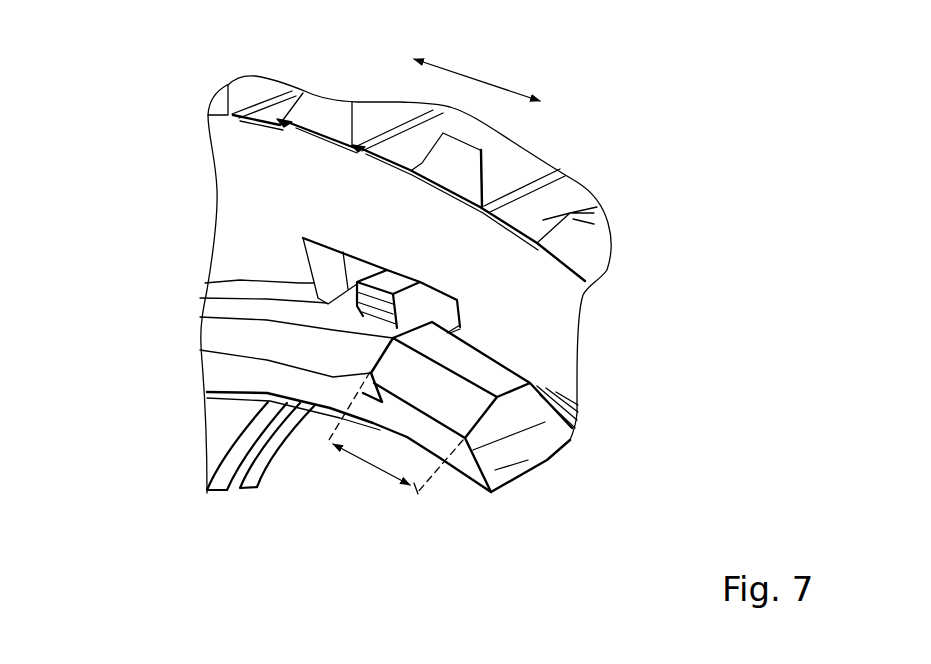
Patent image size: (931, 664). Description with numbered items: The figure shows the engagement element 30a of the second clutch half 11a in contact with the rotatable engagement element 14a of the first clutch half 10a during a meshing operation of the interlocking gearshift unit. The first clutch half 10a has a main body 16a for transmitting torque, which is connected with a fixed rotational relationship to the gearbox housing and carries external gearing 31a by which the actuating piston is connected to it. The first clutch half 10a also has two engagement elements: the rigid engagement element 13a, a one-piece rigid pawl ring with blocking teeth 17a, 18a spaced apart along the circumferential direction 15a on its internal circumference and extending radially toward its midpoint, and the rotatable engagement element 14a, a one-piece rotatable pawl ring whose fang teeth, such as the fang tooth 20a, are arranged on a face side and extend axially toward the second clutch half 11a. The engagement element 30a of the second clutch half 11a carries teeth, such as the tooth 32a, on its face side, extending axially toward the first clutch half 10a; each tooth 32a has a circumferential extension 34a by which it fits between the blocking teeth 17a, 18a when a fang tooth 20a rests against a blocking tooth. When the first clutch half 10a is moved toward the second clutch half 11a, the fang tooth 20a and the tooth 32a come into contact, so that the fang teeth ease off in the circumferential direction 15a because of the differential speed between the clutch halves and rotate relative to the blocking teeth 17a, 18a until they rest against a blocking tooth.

The first clutch half 10a is at (209, 190).
The second clutch half 11a is at (190, 350).
The rigid engagement element 13a is at (545, 333).
The rotatable engagement element 14a is at (352, 258).
The circumferential direction 15a is at (477, 78).
The main body 16a is at (247, 142).
The blocking tooth 17a is at (558, 440).
The blocking tooth 18a is at (253, 310).
The fang tooth 20a is at (397, 278).
The engagement element 30a is at (523, 452).
The external gearing 31a is at (549, 194).
The tooth 32a is at (411, 418).
The circumferential extension 34a is at (380, 469).